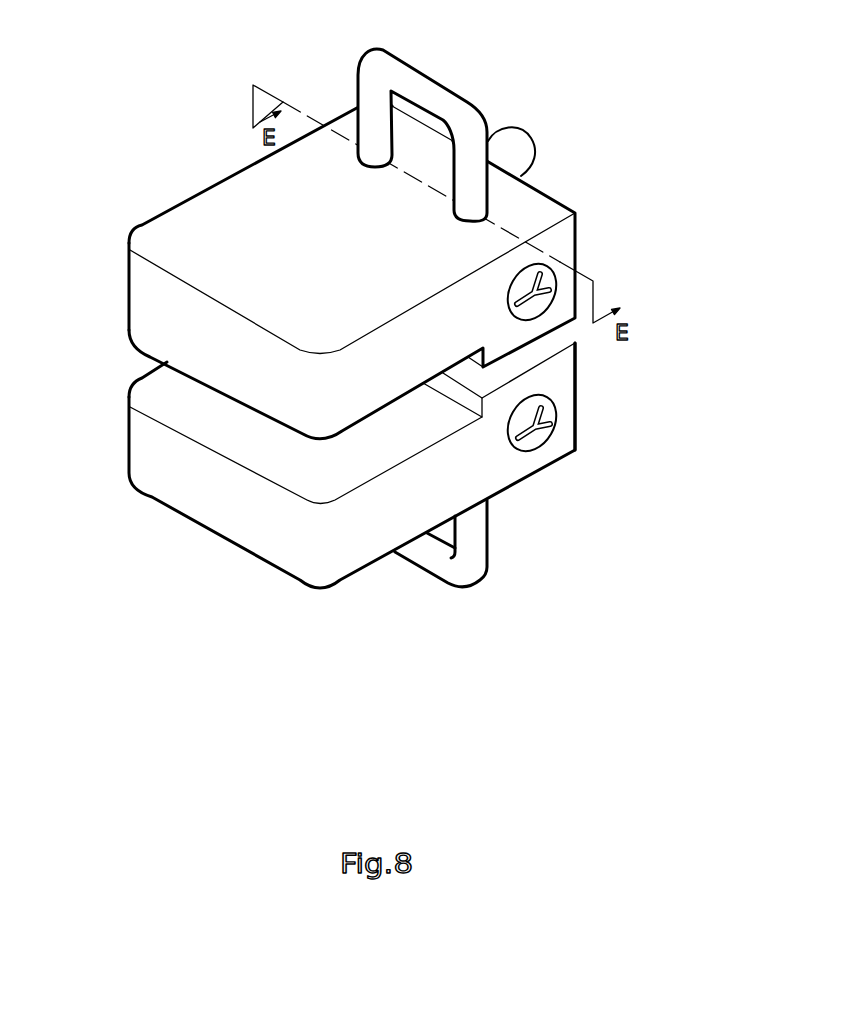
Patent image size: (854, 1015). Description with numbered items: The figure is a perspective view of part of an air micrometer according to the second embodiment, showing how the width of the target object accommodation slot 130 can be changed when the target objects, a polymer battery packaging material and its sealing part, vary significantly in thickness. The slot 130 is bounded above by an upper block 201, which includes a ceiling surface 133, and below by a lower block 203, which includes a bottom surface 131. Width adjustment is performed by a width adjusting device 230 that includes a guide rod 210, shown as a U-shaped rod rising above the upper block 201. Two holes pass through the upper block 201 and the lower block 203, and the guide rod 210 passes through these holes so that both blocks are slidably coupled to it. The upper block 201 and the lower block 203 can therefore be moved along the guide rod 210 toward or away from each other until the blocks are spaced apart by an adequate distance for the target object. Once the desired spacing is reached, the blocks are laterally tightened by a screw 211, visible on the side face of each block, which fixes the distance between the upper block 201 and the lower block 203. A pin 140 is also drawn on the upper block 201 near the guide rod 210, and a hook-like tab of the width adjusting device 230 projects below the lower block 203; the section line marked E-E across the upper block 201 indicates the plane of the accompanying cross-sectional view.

The upper block 201 is at (188, 197).
The guide rod 210 is at (428, 80).
The pin 140 is at (515, 140).
The screw 211 is at (550, 273).
The lower block 203 is at (577, 395).
The ceiling surface 133 is at (413, 388).
The bottom surface 131 is at (190, 421).
The target object accommodation slot 130 is at (363, 441).
The width adjusting device 230 is at (483, 612).